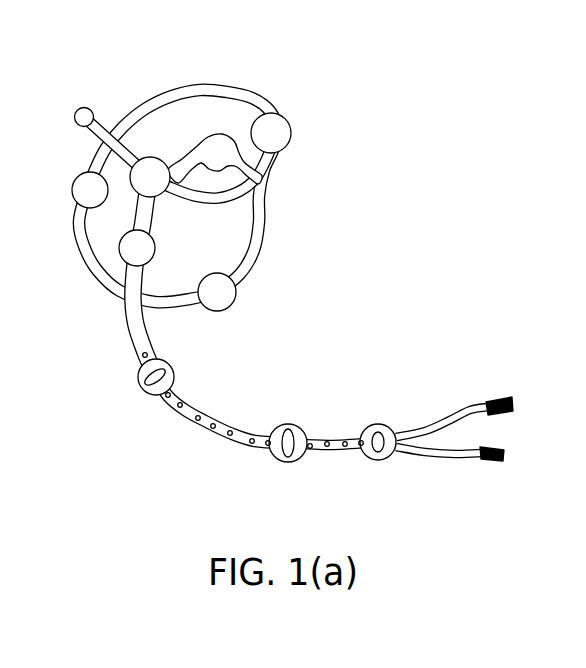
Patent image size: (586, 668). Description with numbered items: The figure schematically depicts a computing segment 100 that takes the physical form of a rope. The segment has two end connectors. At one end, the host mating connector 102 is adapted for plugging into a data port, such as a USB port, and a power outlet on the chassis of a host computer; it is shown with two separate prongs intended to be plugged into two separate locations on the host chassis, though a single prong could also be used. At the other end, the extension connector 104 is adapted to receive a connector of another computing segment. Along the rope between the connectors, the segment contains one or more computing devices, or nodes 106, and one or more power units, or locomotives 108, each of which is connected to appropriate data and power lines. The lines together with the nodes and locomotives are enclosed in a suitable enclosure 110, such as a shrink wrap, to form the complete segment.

The computing segment 100 is at (286, 266).
The host mating connector 102 is at (450, 453).
The extension connector 104 is at (83, 107).
The computing device (node) 106 is at (236, 433).
The power unit (locomotive) 108 is at (287, 462).
The enclosure 110 is at (217, 437).